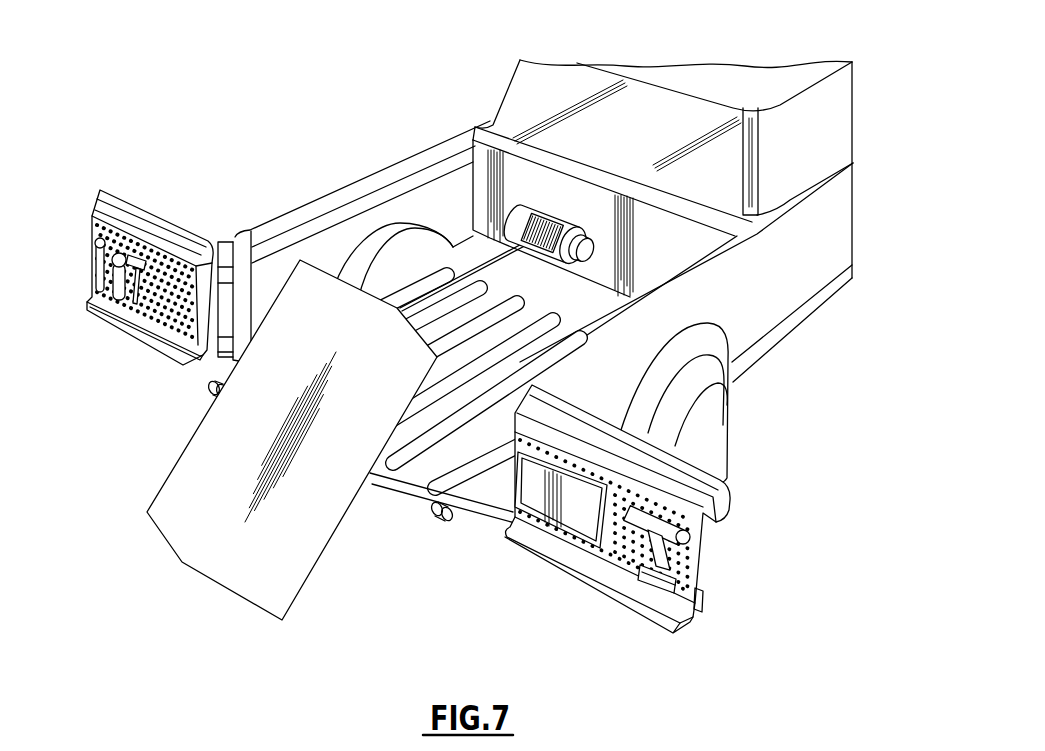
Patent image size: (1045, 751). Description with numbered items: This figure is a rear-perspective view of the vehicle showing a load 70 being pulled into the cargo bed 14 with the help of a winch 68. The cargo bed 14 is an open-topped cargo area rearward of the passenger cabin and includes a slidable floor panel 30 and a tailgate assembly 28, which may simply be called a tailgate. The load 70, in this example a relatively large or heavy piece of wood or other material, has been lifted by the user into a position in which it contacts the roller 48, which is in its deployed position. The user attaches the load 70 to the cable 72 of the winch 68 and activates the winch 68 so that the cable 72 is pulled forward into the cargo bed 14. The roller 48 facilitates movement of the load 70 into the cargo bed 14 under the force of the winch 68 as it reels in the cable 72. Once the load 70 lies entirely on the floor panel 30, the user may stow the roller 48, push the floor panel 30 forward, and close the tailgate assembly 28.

The cargo bed 14 is at (322, 208).
The tailgate assembly 28 is at (167, 208).
The floor panel 30 is at (443, 462).
The roller 48 is at (410, 500).
The winch 68 is at (605, 227).
The load 70 is at (278, 558).
The cable 72 is at (468, 262).